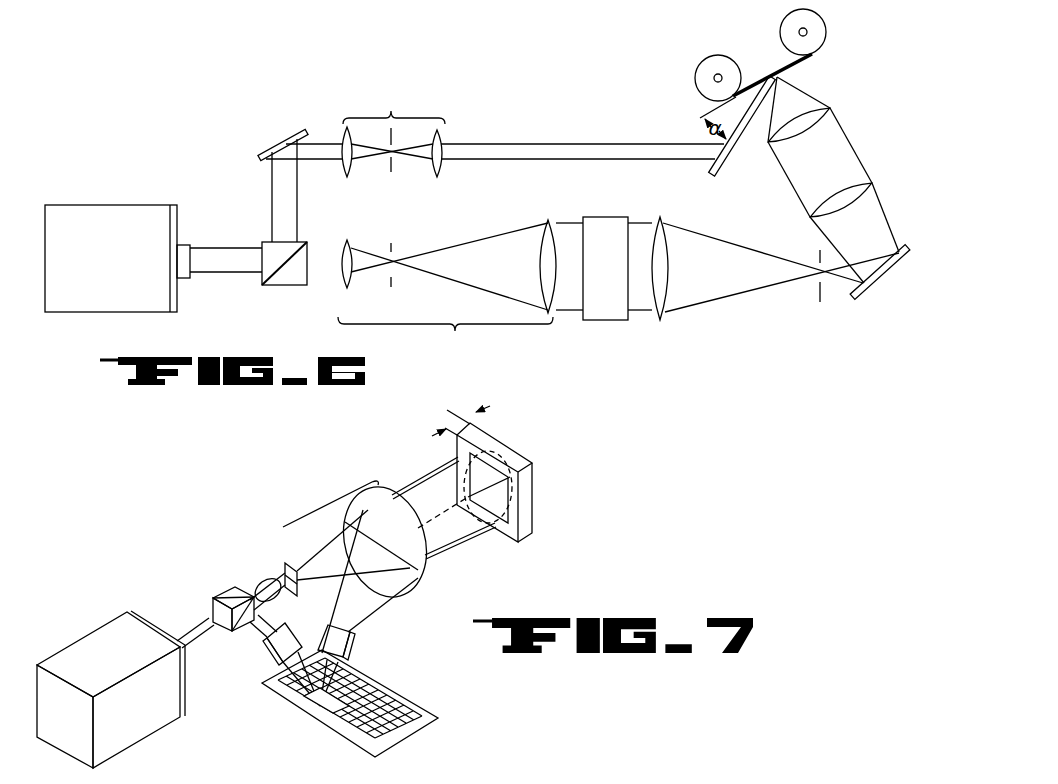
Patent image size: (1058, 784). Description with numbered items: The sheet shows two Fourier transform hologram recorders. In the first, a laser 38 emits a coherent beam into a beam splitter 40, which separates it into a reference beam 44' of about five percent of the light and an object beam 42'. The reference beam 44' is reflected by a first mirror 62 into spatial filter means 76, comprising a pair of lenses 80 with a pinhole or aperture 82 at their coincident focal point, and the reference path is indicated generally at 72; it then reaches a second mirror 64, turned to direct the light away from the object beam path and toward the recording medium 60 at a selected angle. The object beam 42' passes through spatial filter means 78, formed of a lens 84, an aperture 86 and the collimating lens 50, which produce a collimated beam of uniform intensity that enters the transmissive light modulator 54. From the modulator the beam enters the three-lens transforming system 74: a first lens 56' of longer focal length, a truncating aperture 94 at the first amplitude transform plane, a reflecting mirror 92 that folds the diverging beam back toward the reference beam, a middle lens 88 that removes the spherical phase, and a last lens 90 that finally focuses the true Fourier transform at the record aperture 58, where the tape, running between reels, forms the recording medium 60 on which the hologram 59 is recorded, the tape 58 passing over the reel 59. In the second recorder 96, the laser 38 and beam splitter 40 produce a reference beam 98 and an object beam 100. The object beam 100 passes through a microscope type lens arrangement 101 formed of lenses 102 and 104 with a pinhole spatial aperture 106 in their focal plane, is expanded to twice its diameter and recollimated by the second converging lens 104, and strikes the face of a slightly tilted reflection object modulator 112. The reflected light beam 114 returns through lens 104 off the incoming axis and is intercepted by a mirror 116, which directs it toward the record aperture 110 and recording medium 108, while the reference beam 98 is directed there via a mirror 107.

In FIG. 6, the laser 38 is at (115, 210).
In FIG. 7, the laser 38 is at (107, 632).
In FIG. 6, the beam splitter 40 is at (278, 288).
In FIG. 7, the beam splitter 40 is at (212, 606).
In FIG. 6, the reference beam 44' is at (255, 190).
In FIG. 6, the object beam 42' is at (449, 260).
In FIG. 6, the first mirror 62 is at (291, 137).
In FIG. 6, the spatial filter means 76 is at (394, 107).
In FIG. 6, the spatial filter means 78 is at (445, 337).
In FIG. 6, the lenses 80 is at (345, 171).
In FIG. 6, the pinhole or aperture 82 is at (391, 173).
In FIG. 6, the lens 84 is at (343, 246).
In FIG. 6, the aperture 86 is at (391, 244).
In FIG. 6, the collimating lens 50 is at (549, 220).
In FIG. 6, the light modulator 54 is at (608, 218).
In FIG. 6, the first lens 56' is at (664, 248).
In FIG. 6, the reference beam path 72 is at (633, 132).
In FIG. 6, the transform plane 58 is at (800, 67).
In FIG. 6, the hologram 59 is at (776, 72).
In FIG. 6, the recording medium 60 is at (757, 82).
In FIG. 6, the second mirror 64 is at (722, 178).
In FIG. 6, the three-lens transforming system 74 is at (770, 160).
In FIG. 6, the lens 90 is at (832, 112).
In FIG. 6, the lens 88 is at (875, 185).
In FIG. 6, the reflecting mirror 92 is at (884, 287).
In FIG. 6, the truncating aperture 94 is at (818, 297).
In FIG. 7, the Fourier transform holographic recorder 96 is at (461, 600).
In FIG. 7, the reference beam 98 is at (250, 638).
In FIG. 7, the object beam 100 is at (317, 547).
In FIG. 7, the microscope type lens arrangement 101 is at (316, 509).
In FIG. 7, the lens 102 is at (257, 578).
In FIG. 7, the second converging lens 104 is at (410, 580).
In FIG. 7, the pinhole spatial aperture 106 is at (300, 578).
In FIG. 7, the mirror 107 is at (277, 655).
In FIG. 7, the recording medium 108 is at (388, 692).
In FIG. 7, the record aperture 110 is at (322, 720).
In FIG. 7, the reflection object modulator 112 is at (527, 510).
In FIG. 7, the reflected light beam 114 is at (381, 612).
In FIG. 7, the mirror 116 is at (353, 643).